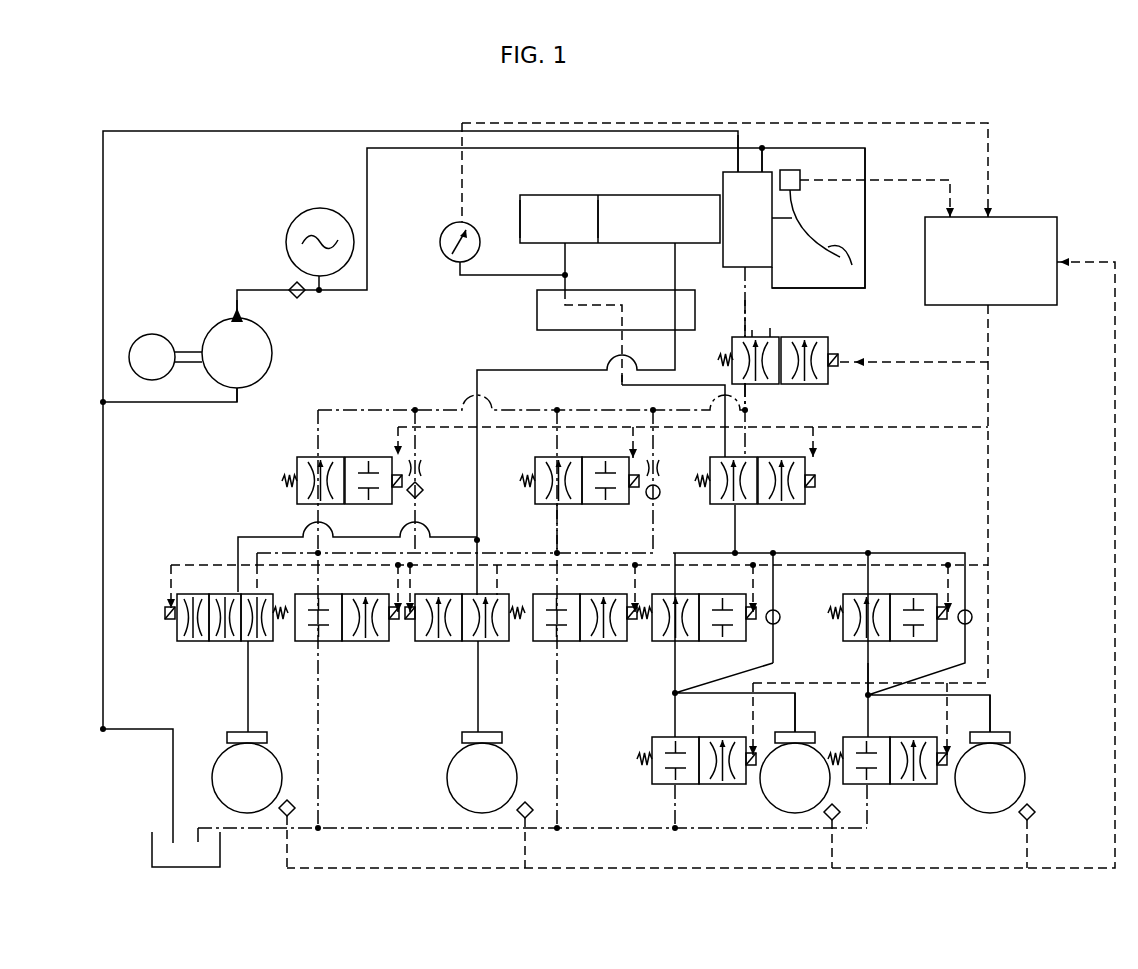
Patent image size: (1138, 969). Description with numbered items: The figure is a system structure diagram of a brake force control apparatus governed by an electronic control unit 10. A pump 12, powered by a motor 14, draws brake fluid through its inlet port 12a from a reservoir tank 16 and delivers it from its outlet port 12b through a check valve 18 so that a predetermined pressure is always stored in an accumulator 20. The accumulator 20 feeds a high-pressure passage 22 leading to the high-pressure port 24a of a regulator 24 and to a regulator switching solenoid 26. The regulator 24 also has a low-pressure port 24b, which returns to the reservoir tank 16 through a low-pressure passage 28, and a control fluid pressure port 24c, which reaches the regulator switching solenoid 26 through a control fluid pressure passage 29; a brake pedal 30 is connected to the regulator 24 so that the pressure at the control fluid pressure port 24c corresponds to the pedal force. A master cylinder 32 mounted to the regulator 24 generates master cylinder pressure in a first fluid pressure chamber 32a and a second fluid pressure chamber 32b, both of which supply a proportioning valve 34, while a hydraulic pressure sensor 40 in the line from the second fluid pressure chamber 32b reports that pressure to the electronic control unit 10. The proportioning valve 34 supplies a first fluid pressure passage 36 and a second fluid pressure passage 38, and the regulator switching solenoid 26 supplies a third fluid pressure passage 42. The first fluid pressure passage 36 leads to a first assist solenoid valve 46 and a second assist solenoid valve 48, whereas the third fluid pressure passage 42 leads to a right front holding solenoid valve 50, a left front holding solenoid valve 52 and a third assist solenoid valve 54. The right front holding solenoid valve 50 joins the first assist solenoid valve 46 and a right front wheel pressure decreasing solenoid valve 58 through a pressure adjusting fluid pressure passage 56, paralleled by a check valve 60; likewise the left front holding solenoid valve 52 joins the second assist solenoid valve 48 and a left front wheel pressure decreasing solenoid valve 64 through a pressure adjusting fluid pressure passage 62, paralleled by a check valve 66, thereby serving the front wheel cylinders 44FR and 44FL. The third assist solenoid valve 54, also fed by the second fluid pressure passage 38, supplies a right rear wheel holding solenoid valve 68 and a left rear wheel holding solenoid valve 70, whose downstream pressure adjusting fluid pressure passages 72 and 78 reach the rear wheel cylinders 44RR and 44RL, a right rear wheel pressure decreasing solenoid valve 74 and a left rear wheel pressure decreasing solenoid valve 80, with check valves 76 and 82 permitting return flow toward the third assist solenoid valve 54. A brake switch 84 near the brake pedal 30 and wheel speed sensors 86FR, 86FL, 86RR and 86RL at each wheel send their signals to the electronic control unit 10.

The electronic control unit 10 is at (1057, 228).
The pump 12 is at (272, 350).
The inlet port 12a is at (248, 394).
The outlet port 12b is at (243, 305).
The motor 14 is at (146, 334).
The reservoir tank 16 is at (222, 851).
The check valve 18 is at (305, 297).
The accumulator 20 is at (317, 208).
The high-pressure passage 22 is at (395, 152).
The regulator 24 is at (723, 186).
The high-pressure port 24a is at (766, 158).
The low-pressure port 24b is at (738, 165).
The control fluid pressure port 24c is at (745, 272).
The regulator switching solenoid 26 is at (778, 337).
The low-pressure passage 28 is at (290, 131).
The control fluid pressure passage 29 is at (745, 318).
The brake pedal 30 is at (800, 224).
The master cylinder 32 is at (594, 195).
The first fluid pressure chamber 32a is at (626, 195).
The second fluid pressure chamber 32b is at (522, 195).
The proportioning valve 34 is at (537, 326).
The first fluid pressure passage 36 is at (726, 364).
The second fluid pressure passage 38 is at (622, 366).
The hydraulic pressure sensor 40 is at (440, 258).
The third fluid pressure passage 42 is at (748, 397).
The wheel cylinder 44FR is at (255, 732).
The wheel cylinder 44FL is at (495, 732).
The wheel cylinder 44RR is at (808, 732).
The wheel cylinder 44RL is at (1003, 732).
The first assist solenoid valve 46 is at (190, 641).
The second assist solenoid valve 48 is at (443, 643).
The right front holding solenoid valve 50 is at (297, 457).
The left front holding solenoid valve 52 is at (536, 458).
The third assist solenoid valve 54 is at (790, 508).
The pressure adjusting fluid pressure passage 56 is at (303, 520).
The right front wheel pressure decreasing solenoid valve 58 is at (335, 641).
The check valve 60 is at (423, 497).
The pressure adjusting fluid pressure passage 62 is at (560, 527).
The left front wheel pressure decreasing solenoid valve 64 is at (572, 642).
The check valve 66 is at (660, 498).
The right rear wheel holding solenoid valve 68 is at (677, 680).
The left rear wheel holding solenoid valve 70 is at (843, 602).
The pressure adjusting fluid pressure passage 72 is at (660, 720).
The right rear wheel pressure decreasing solenoid valve 74 is at (660, 790).
The check valve 76 is at (778, 624).
The pressure adjusting fluid pressure passage 78 is at (866, 674).
The left rear wheel pressure decreasing solenoid valve 80 is at (880, 790).
The check valve 82 is at (975, 620).
The brake switch 84 is at (805, 192).
The wheel speed sensor 86FR is at (295, 802).
The wheel speed sensor 86FL is at (517, 818).
The wheel speed sensor 86RR is at (825, 818).
The wheel speed sensor 86RL is at (1020, 818).